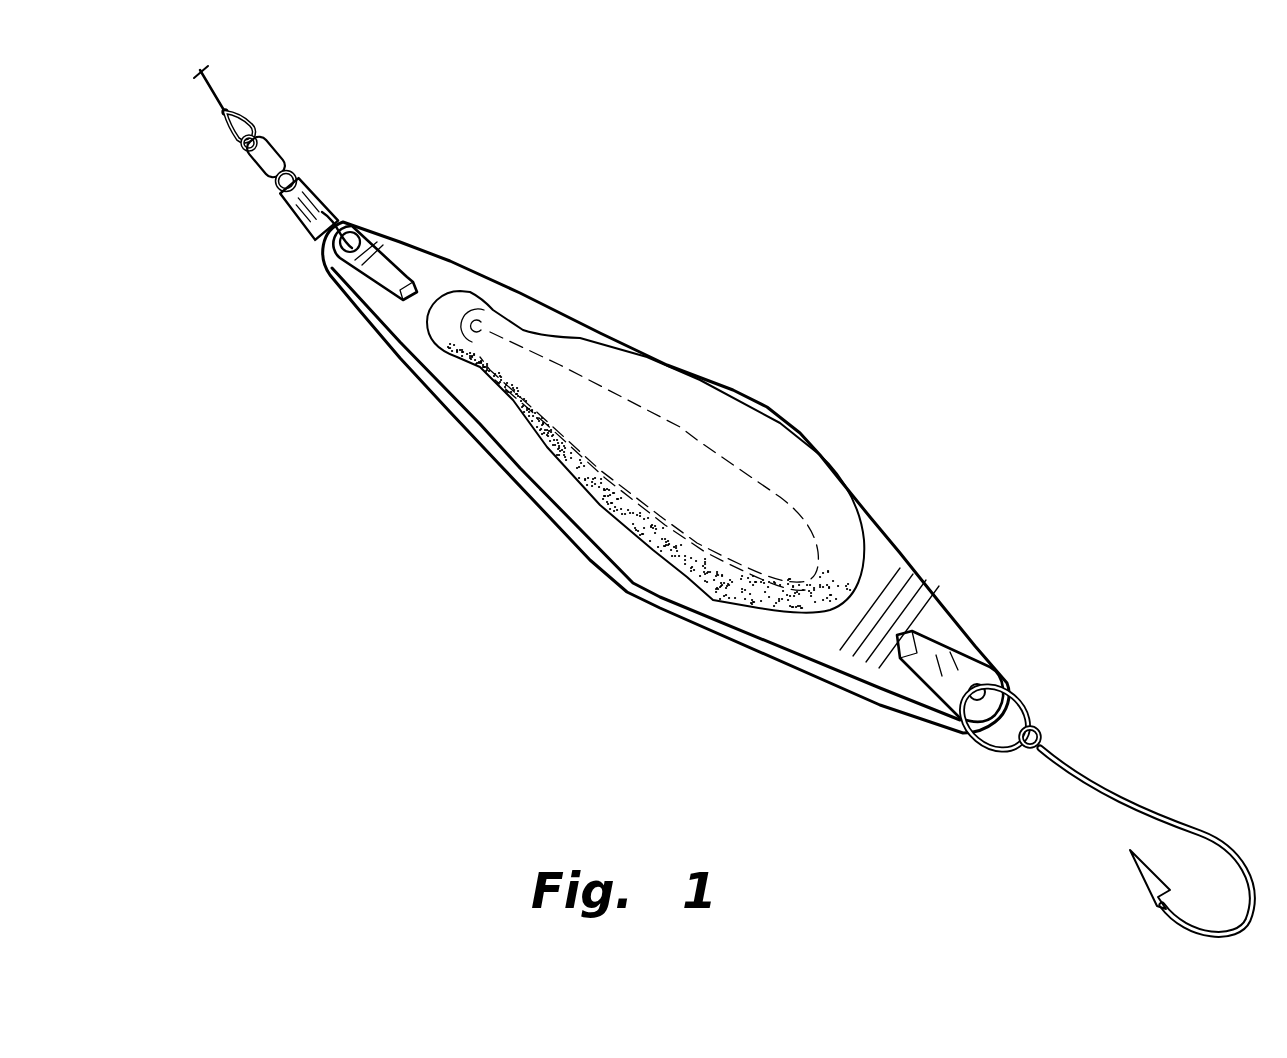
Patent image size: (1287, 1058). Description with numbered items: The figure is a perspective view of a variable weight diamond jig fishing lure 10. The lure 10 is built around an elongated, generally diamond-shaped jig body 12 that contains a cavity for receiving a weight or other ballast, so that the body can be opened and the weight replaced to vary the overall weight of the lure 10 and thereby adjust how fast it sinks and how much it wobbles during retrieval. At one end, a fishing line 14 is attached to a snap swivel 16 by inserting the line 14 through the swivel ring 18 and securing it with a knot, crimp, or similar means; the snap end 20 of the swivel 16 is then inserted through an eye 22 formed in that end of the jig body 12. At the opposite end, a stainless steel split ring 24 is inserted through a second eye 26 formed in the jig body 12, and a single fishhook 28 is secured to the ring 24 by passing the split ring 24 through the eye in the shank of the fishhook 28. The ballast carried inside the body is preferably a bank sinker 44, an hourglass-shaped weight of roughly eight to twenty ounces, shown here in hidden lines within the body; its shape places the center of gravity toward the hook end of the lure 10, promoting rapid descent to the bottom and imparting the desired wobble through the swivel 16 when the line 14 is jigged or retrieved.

The variable weight diamond fishing lure 10 is at (433, 547).
The jig body 12 is at (797, 455).
The fishing line 14 is at (205, 82).
The snap swivel 16 is at (262, 165).
The swivel ring 18 is at (250, 135).
The snap end 20 is at (330, 200).
The eye 22 is at (365, 240).
The split ring 24 is at (1030, 703).
The second eye 26 is at (978, 686).
The fishhook 28 is at (1100, 792).
The bank sinker 44 is at (707, 545).